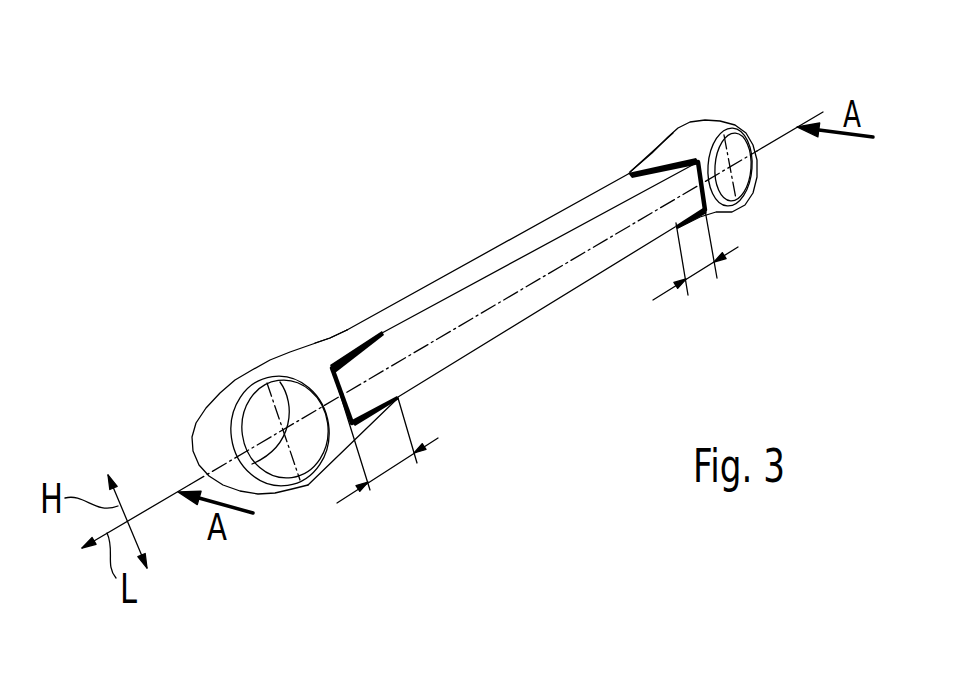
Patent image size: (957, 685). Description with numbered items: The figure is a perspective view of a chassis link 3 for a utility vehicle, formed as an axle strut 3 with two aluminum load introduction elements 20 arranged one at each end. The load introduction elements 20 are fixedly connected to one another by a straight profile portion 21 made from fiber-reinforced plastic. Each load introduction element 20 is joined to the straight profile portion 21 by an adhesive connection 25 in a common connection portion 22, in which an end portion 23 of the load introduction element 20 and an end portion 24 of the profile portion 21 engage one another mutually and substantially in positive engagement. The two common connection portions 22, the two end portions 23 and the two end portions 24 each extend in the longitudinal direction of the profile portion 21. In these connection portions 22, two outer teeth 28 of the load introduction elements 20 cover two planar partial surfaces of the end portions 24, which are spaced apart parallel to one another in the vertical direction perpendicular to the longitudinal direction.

The chassis link 3 is at (418, 138).
The load introduction element 20 is at (190, 385).
The straight profile portion 21 is at (475, 247).
The common connection portion 22 is at (582, 376).
The end portion of the load introduction element 23 is at (582, 376).
The end portion of the profile portion 24 is at (390, 470).
The adhesive connection 25 is at (400, 398).
The outer teeth 28 is at (337, 340).